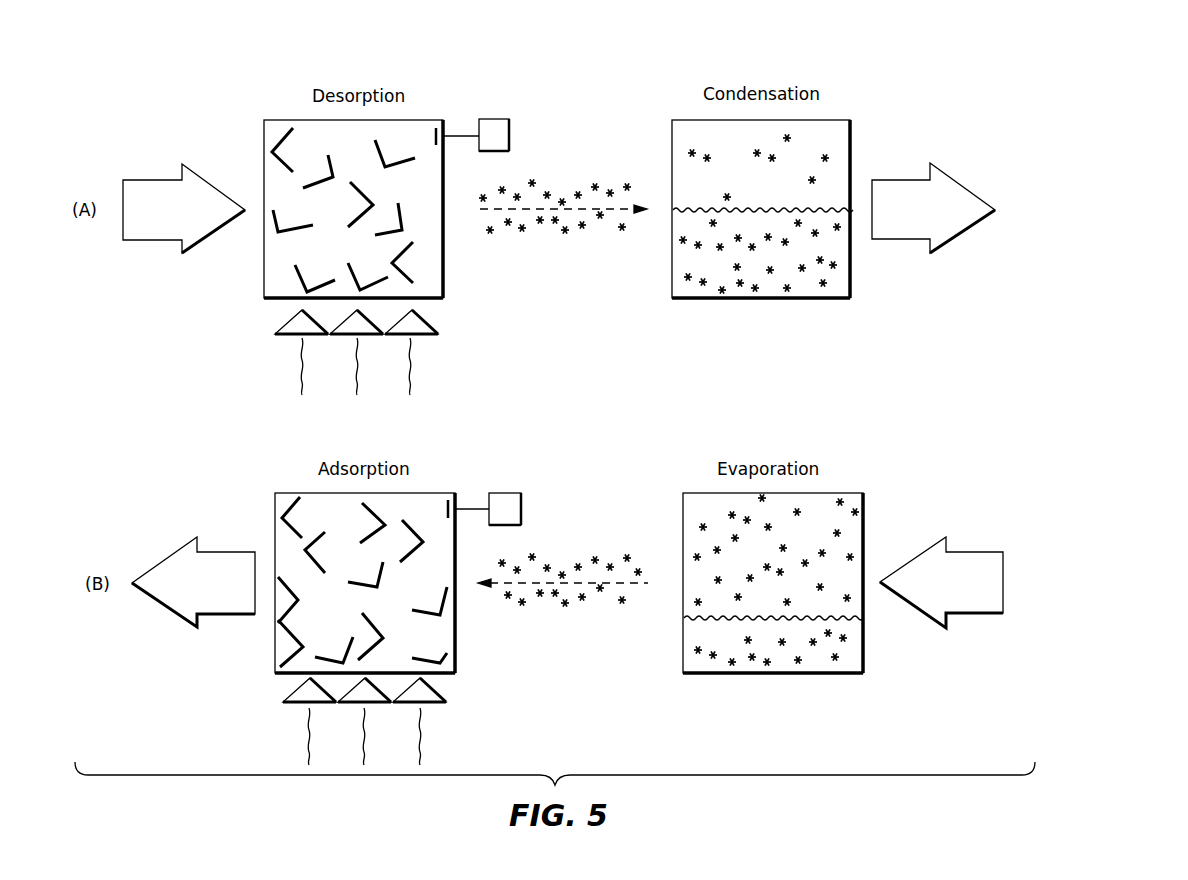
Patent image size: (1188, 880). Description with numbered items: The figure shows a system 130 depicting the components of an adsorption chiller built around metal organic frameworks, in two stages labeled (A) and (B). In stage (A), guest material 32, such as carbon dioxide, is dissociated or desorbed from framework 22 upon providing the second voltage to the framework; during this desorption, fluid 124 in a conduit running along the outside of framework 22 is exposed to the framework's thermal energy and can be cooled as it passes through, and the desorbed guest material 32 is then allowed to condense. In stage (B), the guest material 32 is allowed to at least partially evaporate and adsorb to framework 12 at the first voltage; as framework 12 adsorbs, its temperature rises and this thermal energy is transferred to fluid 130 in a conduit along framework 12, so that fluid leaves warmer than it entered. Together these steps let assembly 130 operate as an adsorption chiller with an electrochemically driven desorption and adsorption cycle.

The framework 22 is at (278, 127).
The framework 12 is at (290, 500).
The guest material 32 is at (610, 191).
The fluid 124 is at (412, 378).
The system 130 is at (420, 748).